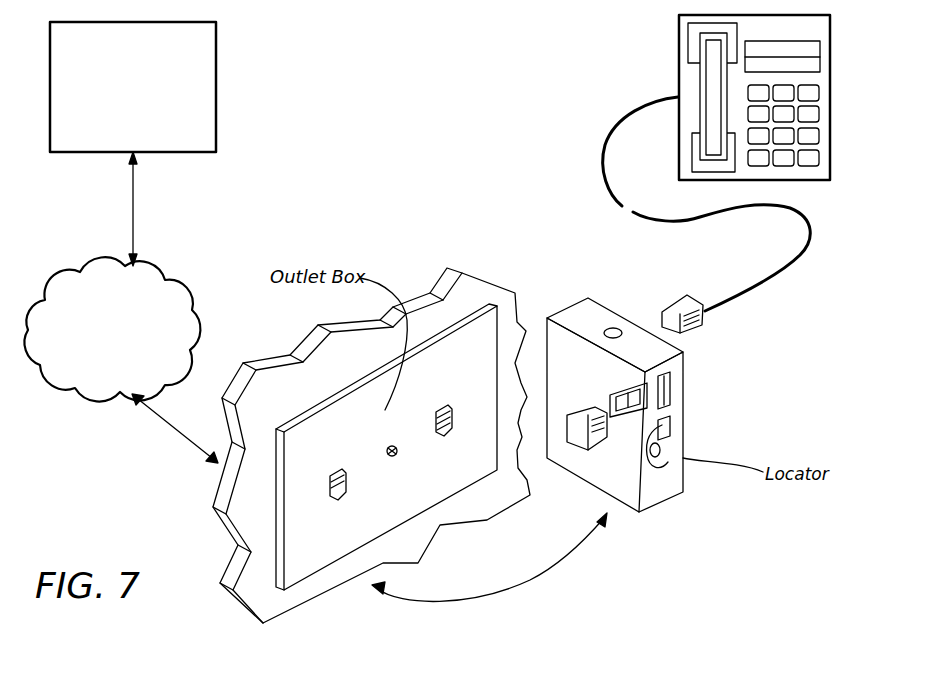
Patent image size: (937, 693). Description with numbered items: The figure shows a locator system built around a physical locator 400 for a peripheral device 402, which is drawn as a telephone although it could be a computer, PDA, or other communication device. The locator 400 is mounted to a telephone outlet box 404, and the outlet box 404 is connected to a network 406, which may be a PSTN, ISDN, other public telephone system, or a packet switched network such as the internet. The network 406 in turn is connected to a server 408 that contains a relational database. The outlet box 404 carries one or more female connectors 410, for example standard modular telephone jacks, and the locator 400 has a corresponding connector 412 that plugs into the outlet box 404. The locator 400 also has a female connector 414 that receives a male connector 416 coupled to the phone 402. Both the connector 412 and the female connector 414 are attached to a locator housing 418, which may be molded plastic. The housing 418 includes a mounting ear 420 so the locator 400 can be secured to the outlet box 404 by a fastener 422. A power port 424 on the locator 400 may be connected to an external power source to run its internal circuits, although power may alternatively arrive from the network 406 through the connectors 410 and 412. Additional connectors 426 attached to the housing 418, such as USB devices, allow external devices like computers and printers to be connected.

The physical locator 400 is at (637, 515).
The peripheral device 402 is at (668, 32).
The telephone outlet box 404 is at (302, 562).
The network 406 is at (112, 329).
The server 408 is at (133, 87).
The female connectors 410 is at (448, 422).
The connector 412 is at (577, 415).
The female connector 414 is at (630, 397).
The male connector 416 is at (705, 292).
The locator housing 418 is at (622, 488).
The mounting ear 420 is at (660, 470).
The fastener 422 is at (392, 456).
The power port 424 is at (613, 327).
The additional connectors 426 is at (668, 382).